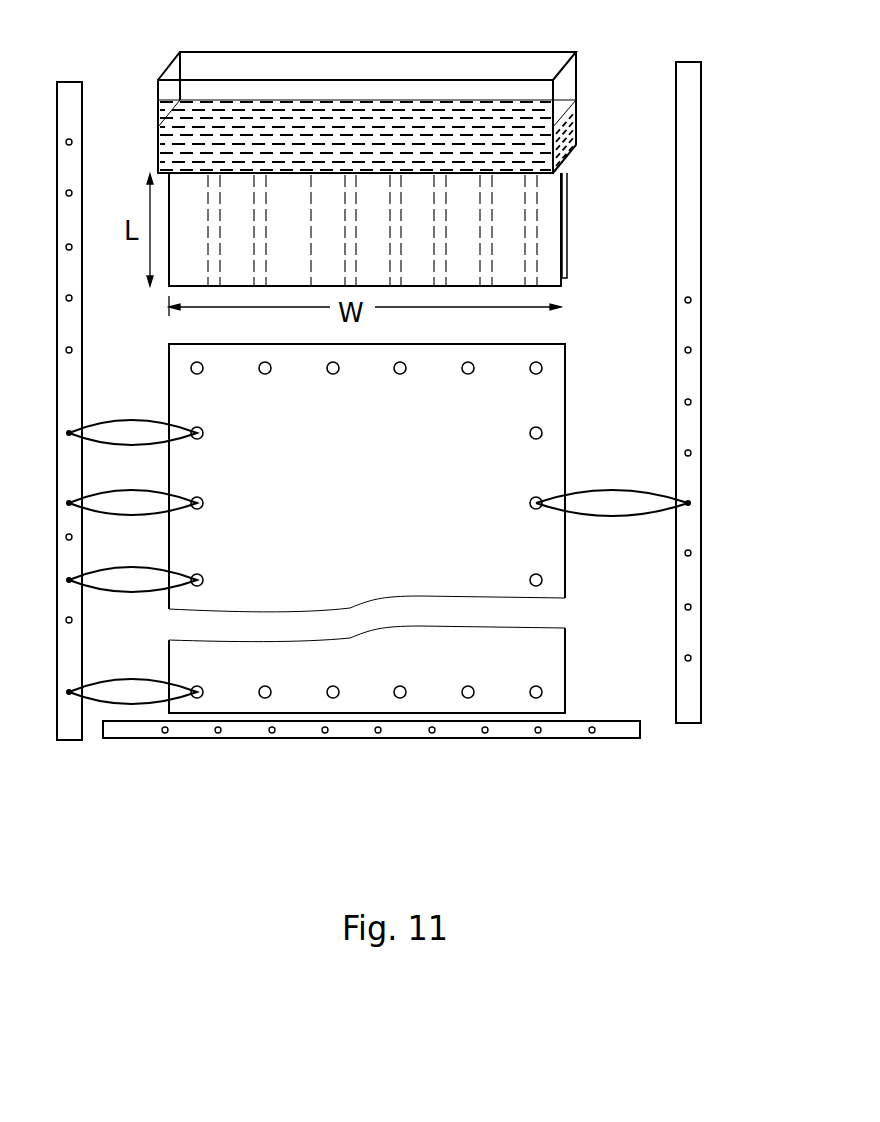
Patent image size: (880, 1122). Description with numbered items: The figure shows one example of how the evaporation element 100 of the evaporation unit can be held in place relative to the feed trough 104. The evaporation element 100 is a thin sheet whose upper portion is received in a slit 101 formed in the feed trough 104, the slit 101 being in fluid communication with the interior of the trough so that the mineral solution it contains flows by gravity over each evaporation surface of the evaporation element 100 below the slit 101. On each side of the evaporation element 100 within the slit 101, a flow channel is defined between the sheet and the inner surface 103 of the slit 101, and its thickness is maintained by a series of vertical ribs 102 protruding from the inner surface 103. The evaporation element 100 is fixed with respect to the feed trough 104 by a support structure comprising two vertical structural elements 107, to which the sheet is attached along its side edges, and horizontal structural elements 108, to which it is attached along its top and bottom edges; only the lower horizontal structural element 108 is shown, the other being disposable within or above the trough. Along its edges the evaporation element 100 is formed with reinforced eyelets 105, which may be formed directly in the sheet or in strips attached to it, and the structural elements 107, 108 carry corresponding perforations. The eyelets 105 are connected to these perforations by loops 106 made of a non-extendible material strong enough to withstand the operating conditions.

The evaporation element 100 is at (390, 541).
The slit 101 is at (548, 232).
The vertical ribs 102 is at (213, 257).
The inner surface of the slit 103 is at (565, 268).
The feed trough 104 is at (226, 62).
The reinforced eyelets 105 is at (393, 360).
The loops 106 is at (600, 490).
The vertical structural elements 107 is at (705, 575).
The horizontal structural elements 108 is at (640, 731).